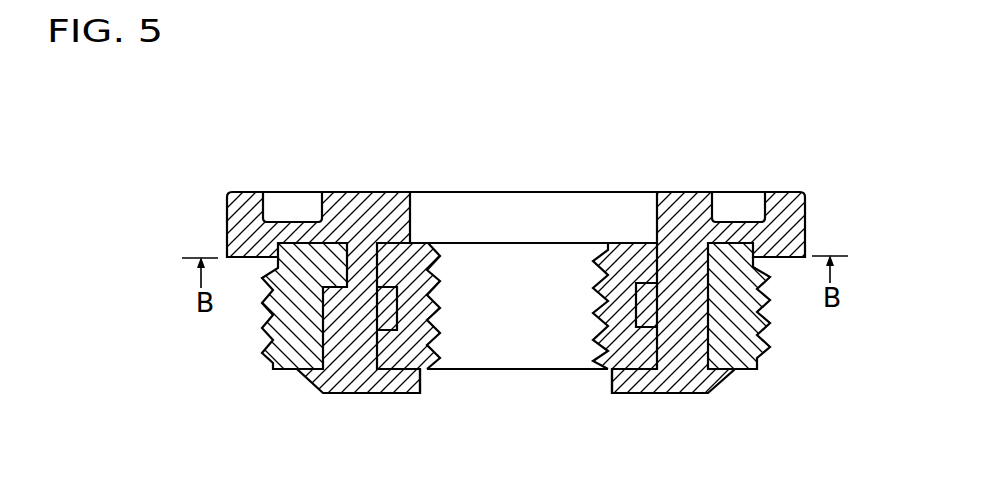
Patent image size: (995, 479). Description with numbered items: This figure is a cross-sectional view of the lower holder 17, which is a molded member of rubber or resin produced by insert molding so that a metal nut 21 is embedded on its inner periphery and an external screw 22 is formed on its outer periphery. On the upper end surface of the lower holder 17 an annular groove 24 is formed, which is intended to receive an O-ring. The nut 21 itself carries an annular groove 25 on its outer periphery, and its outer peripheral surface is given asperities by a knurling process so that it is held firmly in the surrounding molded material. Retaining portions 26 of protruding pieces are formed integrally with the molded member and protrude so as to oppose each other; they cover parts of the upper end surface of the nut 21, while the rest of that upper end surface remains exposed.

The lower holder 17 is at (593, 190).
The nut 21 is at (490, 353).
The external screw 22 is at (745, 345).
The annular groove 24 is at (740, 205).
The annular groove 25 is at (603, 308).
The retaining portions 26 is at (378, 208).